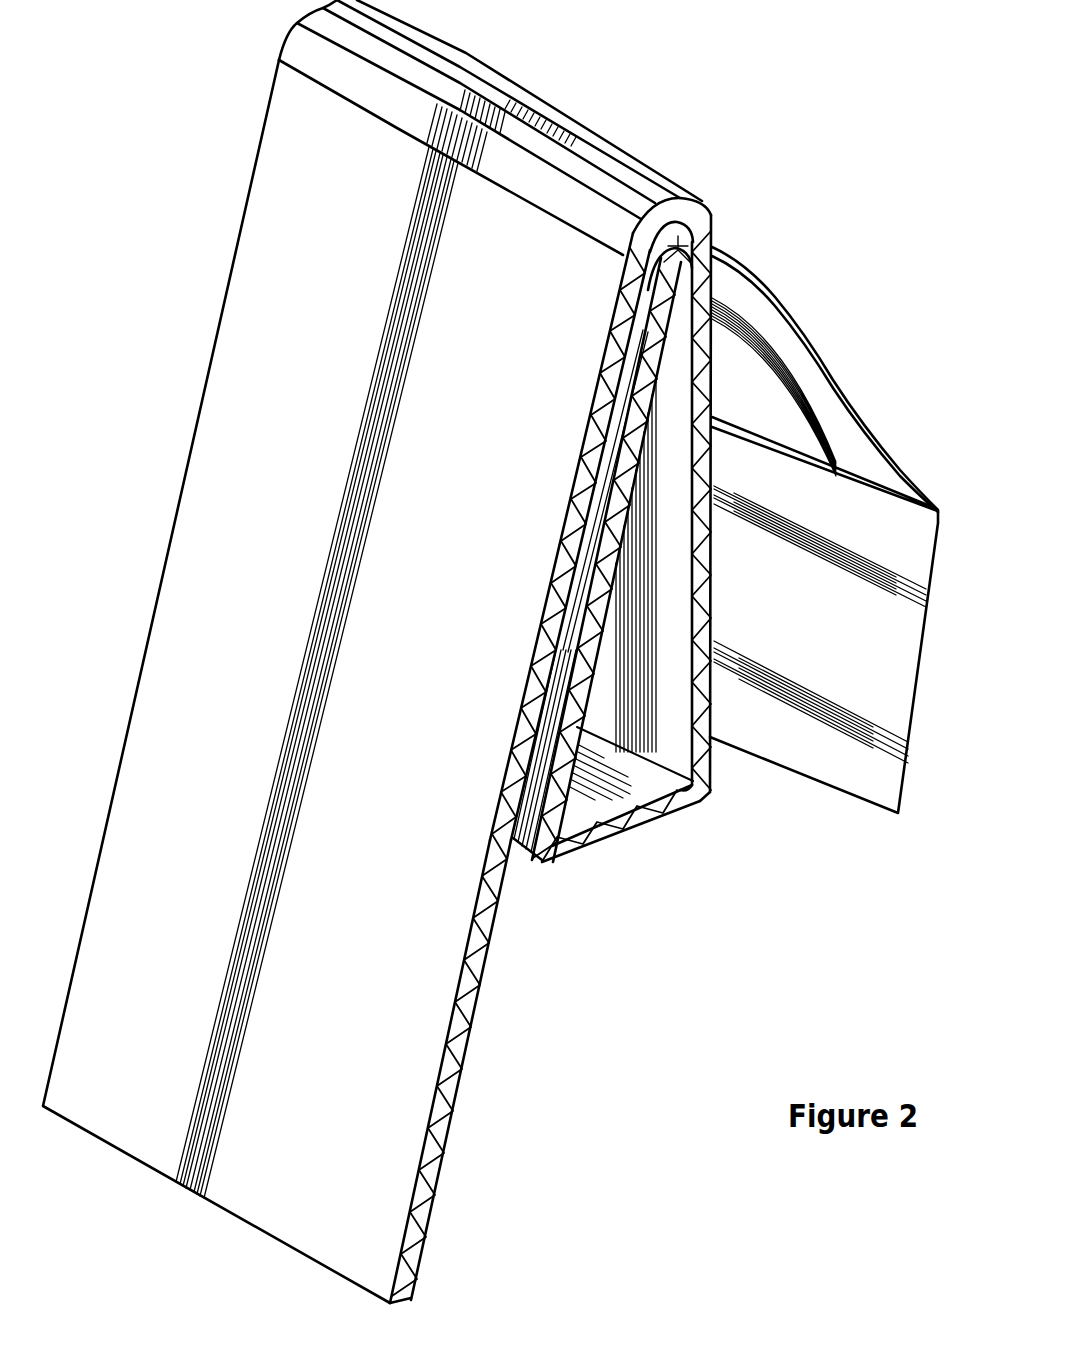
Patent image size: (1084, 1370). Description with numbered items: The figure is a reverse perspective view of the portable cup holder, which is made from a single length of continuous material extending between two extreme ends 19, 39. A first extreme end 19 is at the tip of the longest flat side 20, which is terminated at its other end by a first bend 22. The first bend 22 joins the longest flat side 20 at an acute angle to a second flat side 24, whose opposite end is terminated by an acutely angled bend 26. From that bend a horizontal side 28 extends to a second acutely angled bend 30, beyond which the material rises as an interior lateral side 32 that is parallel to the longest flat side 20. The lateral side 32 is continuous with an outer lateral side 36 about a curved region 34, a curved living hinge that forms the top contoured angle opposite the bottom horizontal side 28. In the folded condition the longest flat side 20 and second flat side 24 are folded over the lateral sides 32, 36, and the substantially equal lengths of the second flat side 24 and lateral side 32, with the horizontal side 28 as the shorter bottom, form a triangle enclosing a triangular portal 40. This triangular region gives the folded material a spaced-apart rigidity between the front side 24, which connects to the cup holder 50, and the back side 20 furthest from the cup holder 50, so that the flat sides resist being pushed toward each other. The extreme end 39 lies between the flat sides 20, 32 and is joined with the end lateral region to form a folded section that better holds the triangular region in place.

The first extreme end 19 is at (407, 1293).
The longest flat side 20 is at (398, 1062).
The first bend 22 is at (548, 145).
The second flat side 24 is at (710, 330).
The acutely angled bend 26 is at (703, 792).
The horizontal side 28 is at (632, 818).
The second acutely angled bend 30 is at (553, 850).
The lateral side 32 is at (603, 572).
The curved region 34 is at (678, 248).
The lateral side 36 is at (590, 432).
The extreme end 39 is at (553, 613).
The triangular portal 40 is at (622, 673).
The cup holder 50 is at (875, 675).